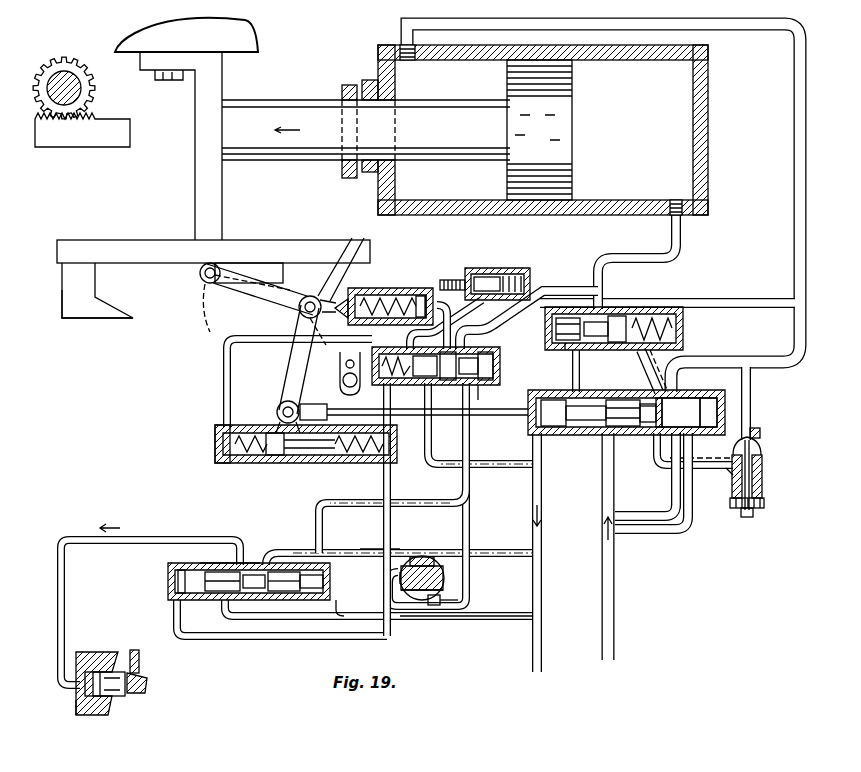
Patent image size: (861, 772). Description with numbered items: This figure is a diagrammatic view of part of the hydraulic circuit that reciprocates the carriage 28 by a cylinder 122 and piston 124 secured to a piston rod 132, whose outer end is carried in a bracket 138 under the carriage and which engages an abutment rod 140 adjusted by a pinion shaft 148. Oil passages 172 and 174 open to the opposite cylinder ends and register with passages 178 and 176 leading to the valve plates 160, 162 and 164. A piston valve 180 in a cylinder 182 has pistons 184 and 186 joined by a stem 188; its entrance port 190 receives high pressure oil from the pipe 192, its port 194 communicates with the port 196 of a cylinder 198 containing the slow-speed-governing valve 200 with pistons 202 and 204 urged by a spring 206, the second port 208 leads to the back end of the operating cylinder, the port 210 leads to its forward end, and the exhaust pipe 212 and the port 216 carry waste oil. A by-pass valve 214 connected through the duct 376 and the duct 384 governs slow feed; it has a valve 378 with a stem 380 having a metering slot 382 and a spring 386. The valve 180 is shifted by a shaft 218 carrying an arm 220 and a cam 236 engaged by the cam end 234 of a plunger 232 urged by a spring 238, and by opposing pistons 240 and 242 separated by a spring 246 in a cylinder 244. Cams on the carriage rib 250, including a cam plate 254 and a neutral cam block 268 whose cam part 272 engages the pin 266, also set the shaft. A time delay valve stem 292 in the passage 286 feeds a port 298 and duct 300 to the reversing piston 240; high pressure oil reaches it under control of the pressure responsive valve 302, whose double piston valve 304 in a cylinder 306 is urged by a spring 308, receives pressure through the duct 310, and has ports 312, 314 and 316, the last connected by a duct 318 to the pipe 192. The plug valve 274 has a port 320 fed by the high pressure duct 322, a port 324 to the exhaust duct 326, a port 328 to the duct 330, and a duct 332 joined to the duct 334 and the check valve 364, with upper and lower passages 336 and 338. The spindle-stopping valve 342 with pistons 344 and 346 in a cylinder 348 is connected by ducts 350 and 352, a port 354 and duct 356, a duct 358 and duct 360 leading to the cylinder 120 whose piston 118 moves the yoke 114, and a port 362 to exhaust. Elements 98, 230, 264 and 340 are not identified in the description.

The carriage 28 is at (243, 41).
The pump housing 98 is at (92, 655).
The spring pressed yoke 114 is at (139, 691).
The piston 118 is at (122, 697).
The cylinder 120 is at (78, 706).
The cylinder 122 is at (708, 52).
The piston 124 is at (566, 118).
The piston rod 132 is at (301, 106).
The bracket 138 is at (222, 75).
The abutment rod 140 is at (112, 120).
The pinion shaft 148 is at (66, 72).
The valve plate 160 is at (168, 591).
The valve plate 162 is at (423, 289).
The valve block 164 is at (684, 312).
The oil passage 172 is at (406, 45).
The oil passage 174 is at (683, 214).
The oil passage 176 is at (618, 258).
The oil passage 178 is at (795, 264).
The piston valve 180 is at (606, 400).
The cylinder 182 is at (702, 400).
The piston 184 is at (554, 400).
The piston 186 is at (616, 436).
The stem 188 is at (584, 436).
The entrance port 190 is at (626, 437).
The pipe 192 is at (614, 610).
The port 194 is at (580, 409).
The port 196 is at (565, 350).
The cylinder 198 is at (592, 320).
The slow-speed-governing piston valve 200 is at (553, 340).
The piston 202 is at (556, 330).
The piston 204 is at (614, 316).
The spring 206 is at (684, 334).
The port 208 is at (640, 350).
The port 210 is at (660, 437).
The exhaust pipe 212 is at (535, 652).
The by-pass valve 214 is at (756, 440).
The port 216 is at (678, 412).
The operating shaft 218 is at (314, 297).
The arm 220 is at (289, 368).
The rod 230 is at (508, 417).
The plunger 232 is at (434, 289).
The V-shaped cam end 234 is at (340, 262).
The V-shaped cam 236 is at (317, 335).
The compression spring 238 is at (445, 290).
The reversing piston 240 is at (261, 463).
The advance piston 242 is at (352, 463).
The cylinder 244 is at (319, 466).
The compression spring 246 is at (290, 463).
The rib 250 is at (107, 247).
The slow speed cam plate 254 is at (273, 264).
The lever arm 264 is at (252, 296).
The pin 266 is at (205, 285).
The neutral cam block 268 is at (93, 319).
The cam part 272 is at (114, 309).
The plug valve 274 is at (422, 568).
The passage 286 is at (531, 272).
The valve stem 292 is at (466, 270).
The port 298 is at (476, 303).
The duct 300 is at (222, 366).
The pressure operated valve means 302 is at (487, 382).
The double piston valve 304 is at (475, 403).
The cylinder 306 is at (445, 386).
The compression spring 308 is at (381, 353).
The duct 310 is at (565, 287).
The port 312 is at (485, 352).
The port 314 is at (462, 386).
The port 316 is at (447, 352).
The duct 318 is at (514, 465).
The port 320 is at (436, 557).
The duct 322 is at (496, 549).
The port 324 is at (442, 606).
The exhaust duct 326 is at (481, 621).
The port 328 is at (406, 571).
The duct 330 is at (388, 578).
The duct 332 is at (448, 591).
The duct 334 is at (471, 522).
The upper passage 336 is at (451, 573).
The lower passage 338 is at (432, 603).
The conduit 340 is at (694, 298).
The valve 342 is at (291, 621).
The piston 344 is at (238, 562).
The piston 346 is at (296, 571).
The cylinder 348 is at (191, 562).
The duct 350 is at (228, 638).
The duct 352 is at (355, 504).
The port 354 is at (262, 560).
The duct 356 is at (370, 550).
The duct 358 is at (246, 597).
The duct 360 is at (164, 538).
The third port 362 is at (222, 571).
The check valve 364 is at (343, 383).
The duct 376 is at (752, 400).
The valve 378 is at (758, 446).
The stem 380 is at (756, 440).
The tapered metering slot 382 is at (740, 452).
The duct 384 is at (727, 466).
The compression spring 386 is at (728, 470).